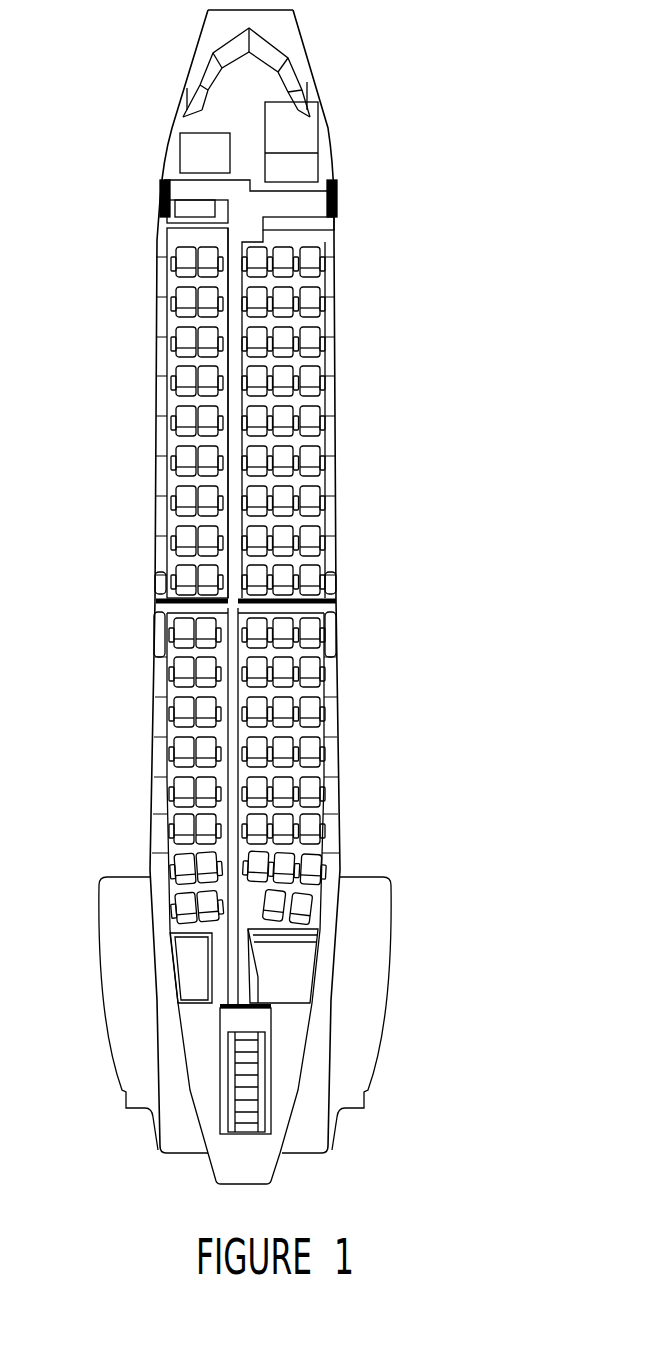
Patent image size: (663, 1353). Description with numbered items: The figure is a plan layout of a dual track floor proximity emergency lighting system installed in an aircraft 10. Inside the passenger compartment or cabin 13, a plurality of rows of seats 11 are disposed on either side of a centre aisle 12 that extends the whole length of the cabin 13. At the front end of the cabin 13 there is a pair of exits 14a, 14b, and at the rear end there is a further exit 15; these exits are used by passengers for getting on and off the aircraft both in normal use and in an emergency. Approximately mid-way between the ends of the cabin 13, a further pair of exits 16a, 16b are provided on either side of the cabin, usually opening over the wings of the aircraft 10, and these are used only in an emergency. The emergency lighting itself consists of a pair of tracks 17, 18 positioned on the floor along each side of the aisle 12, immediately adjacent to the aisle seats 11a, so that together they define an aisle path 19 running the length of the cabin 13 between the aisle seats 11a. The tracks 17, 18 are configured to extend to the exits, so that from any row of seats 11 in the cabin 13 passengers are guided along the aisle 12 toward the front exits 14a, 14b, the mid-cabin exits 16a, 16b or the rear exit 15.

The aircraft 10 is at (368, 121).
The rows of seats 11 is at (307, 752).
The aisle seats 11a is at (210, 783).
The centre aisle 12 is at (234, 733).
The passenger compartment or cabin 13 is at (335, 335).
The front exit 14a is at (160, 198).
The front exit 14b is at (336, 198).
The rear exit 15 is at (252, 1009).
The mid-cabin emergency exit 16a is at (157, 604).
The mid-cabin emergency exit 16b is at (336, 604).
The track 17 is at (218, 523).
The track 18 is at (247, 495).
The aisle path 19 is at (230, 420).